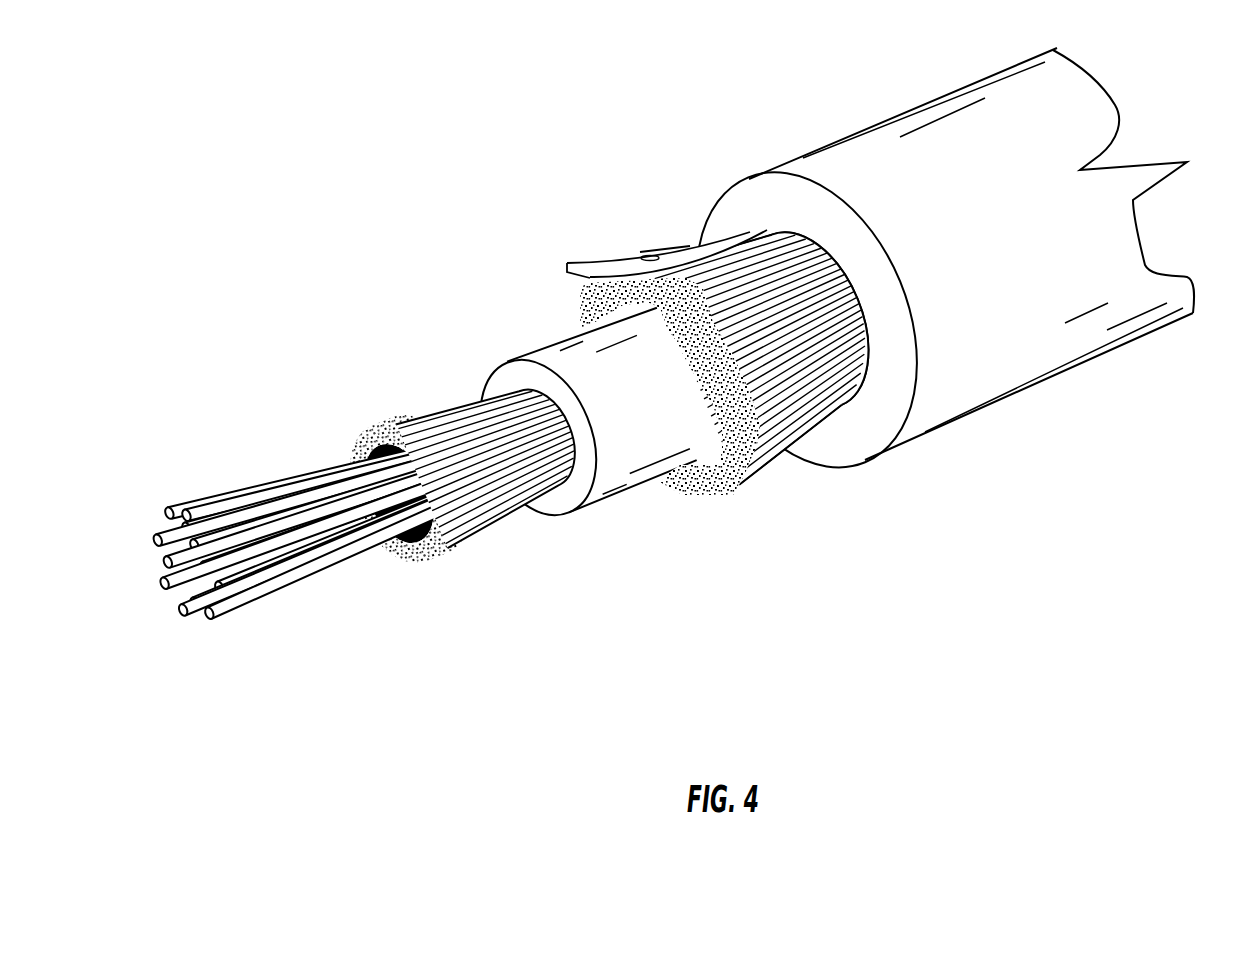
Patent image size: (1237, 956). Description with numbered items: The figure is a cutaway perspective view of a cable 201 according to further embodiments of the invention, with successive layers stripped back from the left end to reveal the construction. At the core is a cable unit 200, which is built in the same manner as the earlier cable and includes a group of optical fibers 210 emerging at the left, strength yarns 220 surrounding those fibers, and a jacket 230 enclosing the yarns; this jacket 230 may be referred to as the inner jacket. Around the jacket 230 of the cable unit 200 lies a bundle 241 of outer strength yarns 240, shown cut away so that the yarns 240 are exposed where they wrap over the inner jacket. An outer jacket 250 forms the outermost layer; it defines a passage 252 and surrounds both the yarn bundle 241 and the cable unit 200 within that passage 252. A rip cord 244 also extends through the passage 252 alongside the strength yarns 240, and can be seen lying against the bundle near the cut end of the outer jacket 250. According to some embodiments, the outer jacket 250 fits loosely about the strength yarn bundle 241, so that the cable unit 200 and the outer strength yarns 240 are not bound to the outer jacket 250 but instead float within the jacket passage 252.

The cable unit 200 is at (343, 400).
The cable 201 is at (713, 129).
The optical fibers 210 is at (240, 497).
The strength yarns 220 is at (365, 499).
The jacket 230 is at (540, 345).
The outer strength yarns 240 is at (636, 282).
The bundle 241 is at (685, 361).
The rip cord 244 is at (673, 258).
The outer jacket 250 is at (848, 180).
The passage 252 is at (823, 272).